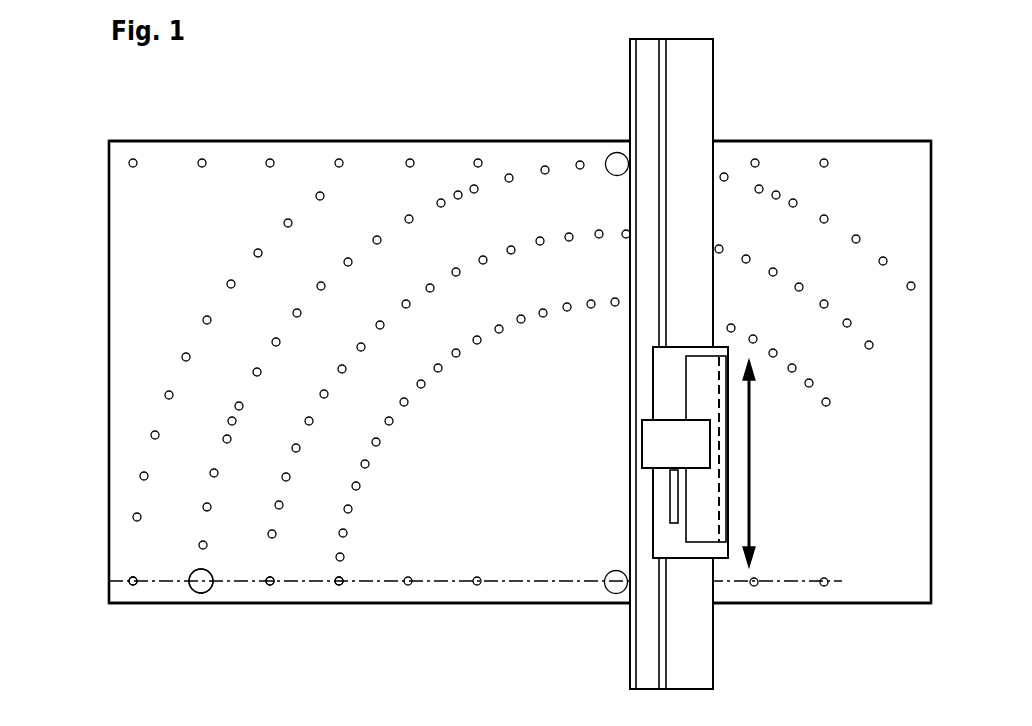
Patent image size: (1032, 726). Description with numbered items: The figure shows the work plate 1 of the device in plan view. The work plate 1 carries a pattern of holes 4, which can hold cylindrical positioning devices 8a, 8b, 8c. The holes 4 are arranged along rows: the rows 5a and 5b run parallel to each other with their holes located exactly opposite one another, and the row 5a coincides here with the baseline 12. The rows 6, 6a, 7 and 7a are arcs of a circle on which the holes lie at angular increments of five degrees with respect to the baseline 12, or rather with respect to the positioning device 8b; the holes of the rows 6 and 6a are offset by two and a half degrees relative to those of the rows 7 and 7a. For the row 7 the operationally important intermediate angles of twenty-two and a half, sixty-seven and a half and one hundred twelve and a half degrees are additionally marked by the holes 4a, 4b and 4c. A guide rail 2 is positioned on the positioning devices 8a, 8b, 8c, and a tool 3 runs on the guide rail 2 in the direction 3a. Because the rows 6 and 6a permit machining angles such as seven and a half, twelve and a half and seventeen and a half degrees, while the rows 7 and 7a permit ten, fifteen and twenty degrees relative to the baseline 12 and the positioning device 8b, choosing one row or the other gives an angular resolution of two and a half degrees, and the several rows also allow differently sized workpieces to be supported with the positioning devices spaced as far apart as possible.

The work plate 1 is at (133, 232).
The guide rail 2 is at (702, 101).
The tool 3 is at (693, 365).
The direction 3a is at (752, 418).
The holes 4 is at (271, 160).
The hole 4a is at (233, 417).
The hole 4b is at (461, 197).
The hole 4c is at (778, 193).
The row 5a is at (88, 581).
The row 5b is at (89, 163).
The row 6 is at (133, 607).
The row 6a is at (269, 607).
The row 7 is at (201, 607).
The row 7a is at (338, 607).
The positioning device 8a is at (199, 568).
The positioning device 8b is at (608, 572).
The positioning device 8c is at (611, 154).
The baseline 12 is at (428, 593).